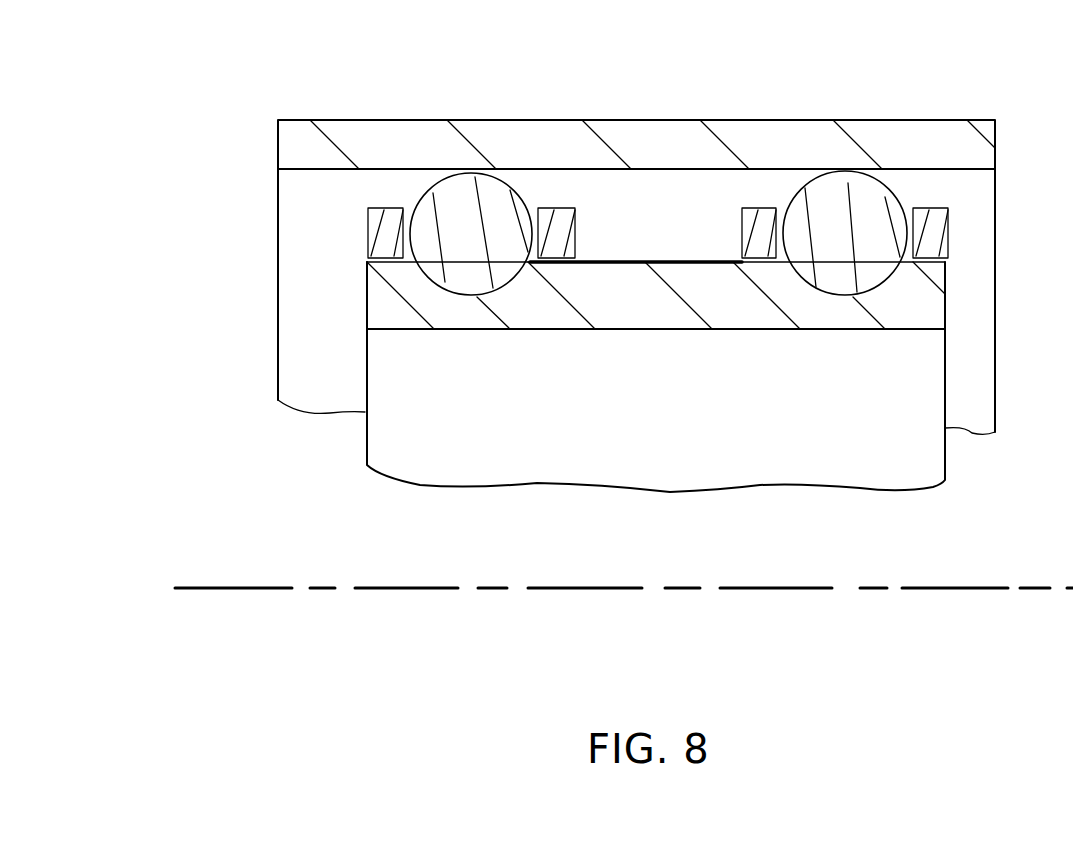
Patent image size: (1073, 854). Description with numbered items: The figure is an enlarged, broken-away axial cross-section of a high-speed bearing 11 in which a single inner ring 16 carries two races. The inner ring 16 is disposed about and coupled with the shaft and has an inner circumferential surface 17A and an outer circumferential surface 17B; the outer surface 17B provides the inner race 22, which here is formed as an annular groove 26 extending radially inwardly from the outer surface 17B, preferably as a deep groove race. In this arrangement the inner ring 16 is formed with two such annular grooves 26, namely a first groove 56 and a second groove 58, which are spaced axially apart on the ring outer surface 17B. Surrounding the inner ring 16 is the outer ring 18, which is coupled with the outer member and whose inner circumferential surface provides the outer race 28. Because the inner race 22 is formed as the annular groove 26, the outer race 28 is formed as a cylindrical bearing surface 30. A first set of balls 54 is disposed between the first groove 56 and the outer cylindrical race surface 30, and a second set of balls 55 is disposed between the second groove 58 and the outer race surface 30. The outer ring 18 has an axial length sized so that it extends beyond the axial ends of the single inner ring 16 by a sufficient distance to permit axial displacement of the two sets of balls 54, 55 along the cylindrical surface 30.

The bearing 11 is at (237, 42).
The inner ring 16 is at (348, 297).
The inner circumferential surface 17A is at (901, 335).
The outer circumferential surface 17B is at (631, 260).
The outer ring 18 is at (255, 165).
The inner race 22 is at (450, 253).
The annular groove 26 is at (517, 275).
The outer race 28 is at (666, 172).
The cylindrical bearing surface 30 is at (972, 170).
The first set of balls 54 is at (493, 190).
The second set of balls 55 is at (868, 190).
The first groove 56 is at (463, 293).
The second groove 58 is at (840, 297).